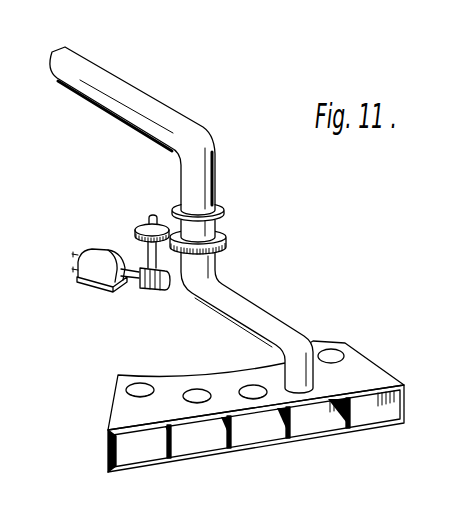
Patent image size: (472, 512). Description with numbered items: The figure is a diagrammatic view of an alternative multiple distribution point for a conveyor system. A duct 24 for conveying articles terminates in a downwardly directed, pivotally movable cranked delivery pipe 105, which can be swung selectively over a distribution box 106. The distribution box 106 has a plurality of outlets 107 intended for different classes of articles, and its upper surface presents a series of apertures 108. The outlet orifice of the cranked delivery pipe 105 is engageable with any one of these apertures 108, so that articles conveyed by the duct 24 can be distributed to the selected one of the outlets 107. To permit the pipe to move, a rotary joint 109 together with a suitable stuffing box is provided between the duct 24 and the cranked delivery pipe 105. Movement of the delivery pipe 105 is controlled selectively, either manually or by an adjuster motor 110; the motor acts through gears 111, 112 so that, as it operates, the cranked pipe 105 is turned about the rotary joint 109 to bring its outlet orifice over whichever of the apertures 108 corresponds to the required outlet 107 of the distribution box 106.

The duct 24 is at (182, 121).
The cranked delivery pipe 105 is at (277, 320).
The distribution box 106 is at (388, 376).
The outlets 107 is at (380, 423).
The apertures 108 is at (199, 389).
The rotary joint 109 is at (222, 211).
The adjuster motor 110 is at (103, 256).
The gear 111 is at (150, 289).
The gear 112 is at (225, 247).